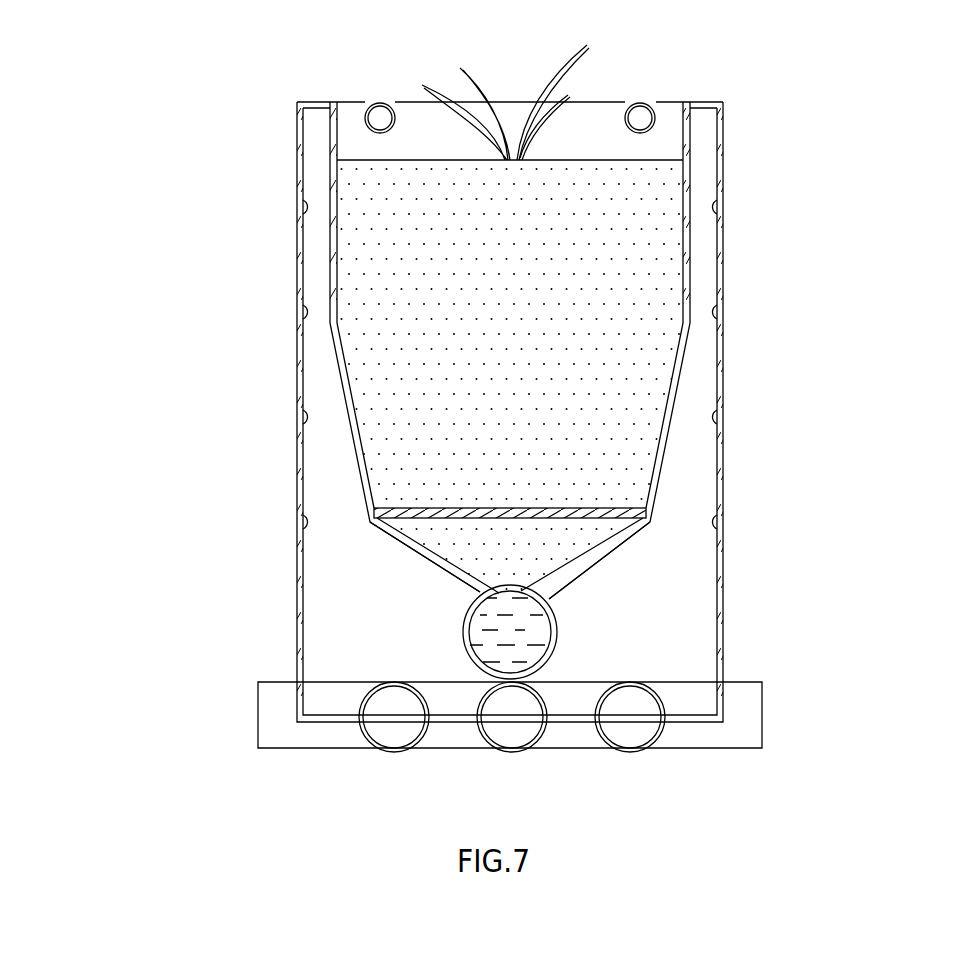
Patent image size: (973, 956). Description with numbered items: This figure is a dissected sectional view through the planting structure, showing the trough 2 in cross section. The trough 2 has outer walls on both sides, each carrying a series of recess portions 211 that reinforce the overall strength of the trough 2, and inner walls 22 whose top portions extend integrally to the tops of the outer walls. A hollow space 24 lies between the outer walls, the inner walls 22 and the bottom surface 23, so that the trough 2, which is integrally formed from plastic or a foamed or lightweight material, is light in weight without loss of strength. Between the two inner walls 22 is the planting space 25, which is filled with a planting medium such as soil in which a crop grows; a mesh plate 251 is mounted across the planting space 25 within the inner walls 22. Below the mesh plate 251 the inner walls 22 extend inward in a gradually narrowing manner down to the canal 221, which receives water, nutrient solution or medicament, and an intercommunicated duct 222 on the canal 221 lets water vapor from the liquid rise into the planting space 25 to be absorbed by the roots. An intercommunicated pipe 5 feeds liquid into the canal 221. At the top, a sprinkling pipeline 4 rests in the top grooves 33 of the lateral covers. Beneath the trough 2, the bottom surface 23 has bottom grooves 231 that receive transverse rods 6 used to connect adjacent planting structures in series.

The trough 2 is at (722, 103).
The recess portions 211 is at (297, 207).
The inner wall 22 is at (335, 250).
The canal 221 is at (463, 628).
The intercommunicated duct 222 is at (508, 578).
The bottom surface 23 is at (687, 714).
The bottom grooves 231 is at (595, 710).
The hollow space 24 is at (683, 457).
The planting space 25 is at (355, 340).
The mesh plate 251 is at (372, 510).
The top grooves 33 is at (369, 104).
The sprinkling pipeline 4 is at (637, 103).
The intercommunicated pipe 5 is at (520, 640).
The transverse rod 6 is at (280, 712).